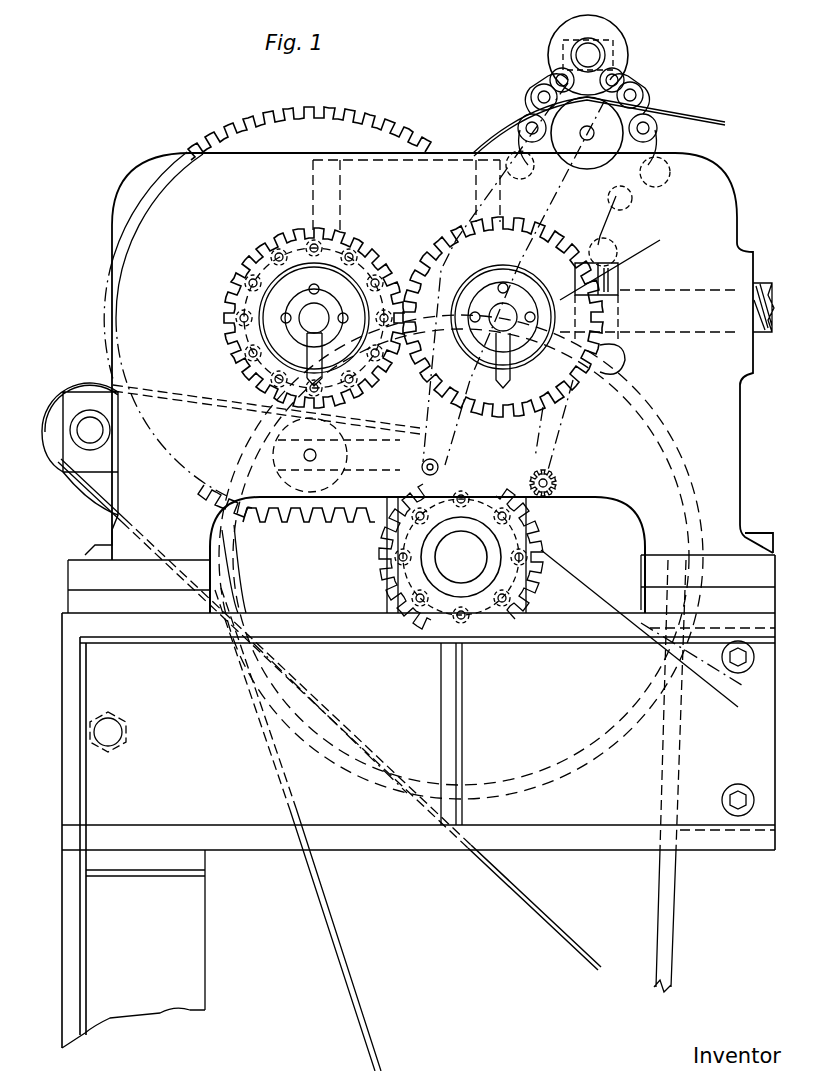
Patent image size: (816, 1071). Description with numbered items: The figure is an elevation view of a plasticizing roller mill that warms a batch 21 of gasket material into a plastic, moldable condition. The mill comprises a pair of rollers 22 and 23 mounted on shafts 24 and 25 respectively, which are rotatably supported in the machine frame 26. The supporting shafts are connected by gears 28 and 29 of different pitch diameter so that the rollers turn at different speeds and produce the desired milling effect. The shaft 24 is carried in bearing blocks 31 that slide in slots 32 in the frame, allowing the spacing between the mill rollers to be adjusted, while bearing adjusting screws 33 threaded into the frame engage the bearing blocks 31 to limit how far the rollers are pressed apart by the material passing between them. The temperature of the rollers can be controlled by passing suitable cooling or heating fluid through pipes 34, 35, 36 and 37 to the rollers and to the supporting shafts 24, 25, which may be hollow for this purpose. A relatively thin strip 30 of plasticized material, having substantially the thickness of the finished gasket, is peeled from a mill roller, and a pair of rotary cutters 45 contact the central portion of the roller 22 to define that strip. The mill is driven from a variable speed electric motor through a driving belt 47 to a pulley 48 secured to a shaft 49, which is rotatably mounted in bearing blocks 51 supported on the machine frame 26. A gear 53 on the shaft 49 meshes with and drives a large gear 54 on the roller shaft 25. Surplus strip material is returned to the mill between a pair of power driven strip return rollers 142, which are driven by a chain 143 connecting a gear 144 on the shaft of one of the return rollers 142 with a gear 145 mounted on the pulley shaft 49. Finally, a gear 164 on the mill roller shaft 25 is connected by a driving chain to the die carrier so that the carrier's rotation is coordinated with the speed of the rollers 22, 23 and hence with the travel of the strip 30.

The batch of gasket material 21 is at (392, 212).
The mill roller 22 is at (290, 228).
The mill roller 23 is at (503, 338).
The shaft 24 is at (617, 248).
The shaft 25 is at (290, 279).
The machine frame 26 is at (135, 188).
The gear 28 is at (240, 282).
The gear 29 is at (520, 228).
The strip of plasticized material 30 is at (90, 492).
The bearing blocks 31 is at (620, 290).
The slots 32 is at (604, 246).
The bearing adjusting screws 33 is at (762, 280).
The pipe 34 is at (307, 340).
The pipe 35 is at (310, 358).
The pipe 36 is at (608, 368).
The pipe 37 is at (600, 384).
The rotary cutters 45 is at (252, 462).
The driving belt 47 is at (340, 975).
The pulley 48 is at (595, 758).
The shaft 49 is at (450, 592).
The bearing blocks 51 is at (572, 593).
The gear 53 is at (383, 562).
The large gear 54 is at (312, 528).
The strip return rollers 142 is at (597, 112).
The chain 143 is at (652, 136).
The gear 144 is at (630, 207).
The gear 145 is at (548, 512).
The gear 164 is at (376, 385).